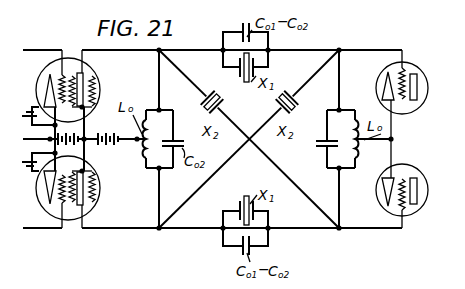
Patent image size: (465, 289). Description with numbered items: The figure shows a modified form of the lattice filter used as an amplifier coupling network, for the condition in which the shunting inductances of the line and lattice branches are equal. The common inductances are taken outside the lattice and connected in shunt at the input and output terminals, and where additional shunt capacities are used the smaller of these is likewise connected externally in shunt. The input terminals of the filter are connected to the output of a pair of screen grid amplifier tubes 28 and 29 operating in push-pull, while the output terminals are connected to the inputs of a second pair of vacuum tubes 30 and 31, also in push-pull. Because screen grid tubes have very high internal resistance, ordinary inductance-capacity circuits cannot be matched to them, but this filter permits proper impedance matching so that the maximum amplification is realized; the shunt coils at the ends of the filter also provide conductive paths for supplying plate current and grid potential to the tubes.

The screen grid amplifier tube 28 is at (70, 58).
The screen grid amplifier tube 29 is at (71, 221).
The vacuum tube 30 is at (404, 62).
The vacuum tube 31 is at (413, 213).